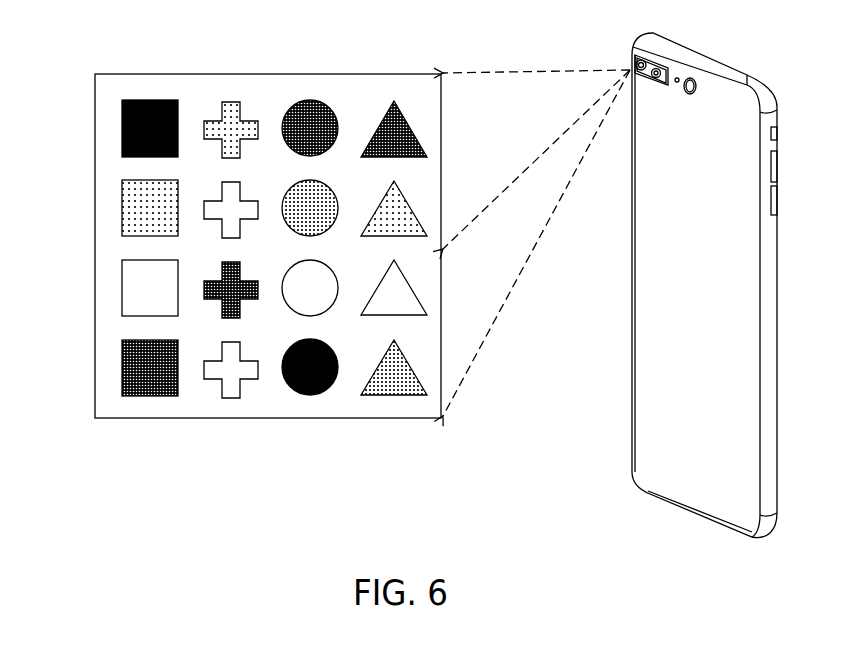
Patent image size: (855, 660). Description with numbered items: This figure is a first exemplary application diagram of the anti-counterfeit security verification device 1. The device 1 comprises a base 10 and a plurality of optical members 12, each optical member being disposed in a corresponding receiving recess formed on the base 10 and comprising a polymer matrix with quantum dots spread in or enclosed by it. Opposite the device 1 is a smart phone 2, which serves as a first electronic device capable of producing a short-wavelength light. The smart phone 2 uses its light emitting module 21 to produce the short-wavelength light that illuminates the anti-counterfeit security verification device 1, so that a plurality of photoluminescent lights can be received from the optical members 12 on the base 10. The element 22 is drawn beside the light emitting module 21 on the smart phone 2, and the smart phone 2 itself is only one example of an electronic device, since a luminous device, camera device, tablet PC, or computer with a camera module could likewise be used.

The anti-counterfeit security verification device 1 is at (97, 384).
The base 10 is at (120, 410).
The optical members 12 is at (128, 348).
The smart phone 2 is at (773, 78).
The light emitting module 21 is at (631, 62).
The flash 22 is at (694, 78).